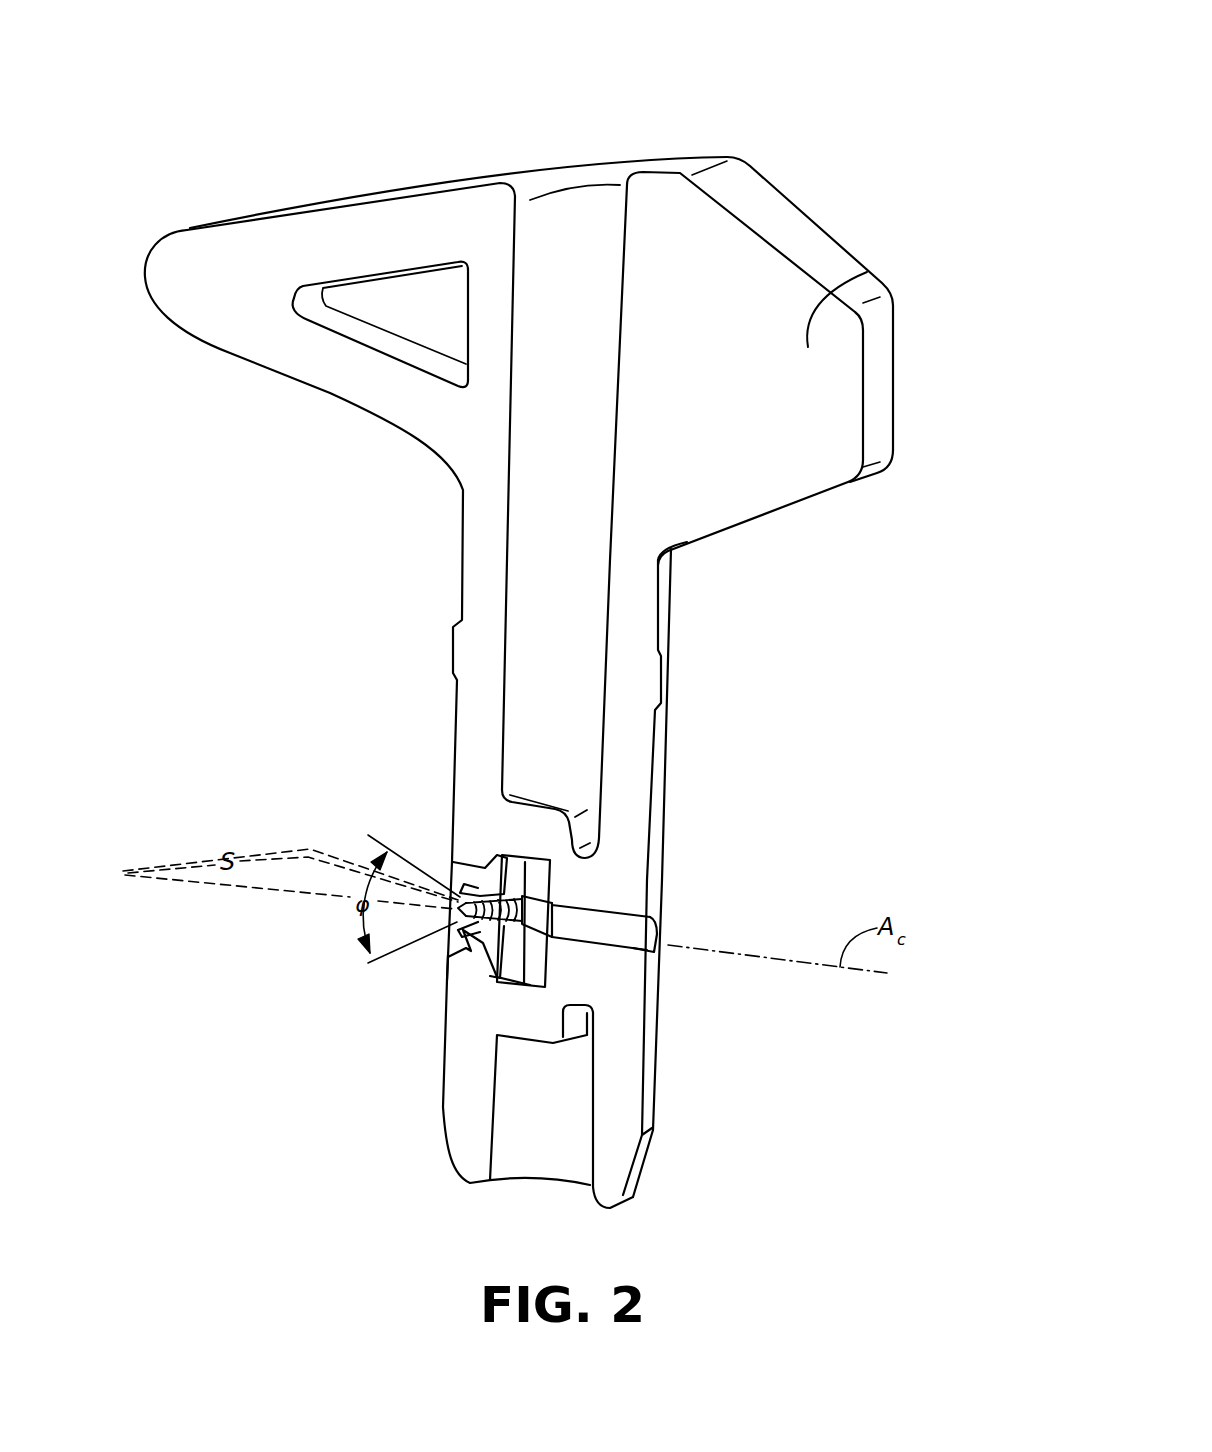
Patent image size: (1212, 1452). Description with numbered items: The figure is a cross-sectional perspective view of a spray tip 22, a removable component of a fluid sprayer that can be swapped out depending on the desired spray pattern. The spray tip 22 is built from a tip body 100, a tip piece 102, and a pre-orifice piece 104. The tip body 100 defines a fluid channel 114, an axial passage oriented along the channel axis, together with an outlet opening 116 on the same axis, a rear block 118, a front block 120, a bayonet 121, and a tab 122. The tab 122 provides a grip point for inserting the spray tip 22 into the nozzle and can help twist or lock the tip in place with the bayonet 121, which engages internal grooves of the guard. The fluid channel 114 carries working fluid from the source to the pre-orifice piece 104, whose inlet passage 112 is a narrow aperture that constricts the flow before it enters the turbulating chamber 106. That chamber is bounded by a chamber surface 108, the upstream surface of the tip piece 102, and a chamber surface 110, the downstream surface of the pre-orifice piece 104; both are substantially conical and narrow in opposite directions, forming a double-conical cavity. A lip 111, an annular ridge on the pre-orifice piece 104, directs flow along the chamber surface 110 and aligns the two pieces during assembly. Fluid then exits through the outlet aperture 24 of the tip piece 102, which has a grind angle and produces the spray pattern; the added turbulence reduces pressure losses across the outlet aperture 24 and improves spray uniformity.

The spray tip 22 is at (808, 130).
The outlet aperture 24 is at (460, 908).
The tip body 100 is at (690, 772).
The tip piece 102 is at (453, 893).
The pre-orifice piece 104 is at (553, 950).
The turbulating chamber 106 is at (500, 863).
The chamber surface 108 is at (535, 980).
The chamber surface 110 is at (590, 908).
The lip 111 is at (530, 975).
The inlet passage 112 is at (657, 933).
The fluid channel 114 is at (655, 952).
The outlet opening 116 is at (503, 957).
The rear block 118 is at (612, 883).
The front block 120 is at (455, 845).
The bayonet 121 is at (643, 677).
The tab 122 is at (867, 272).